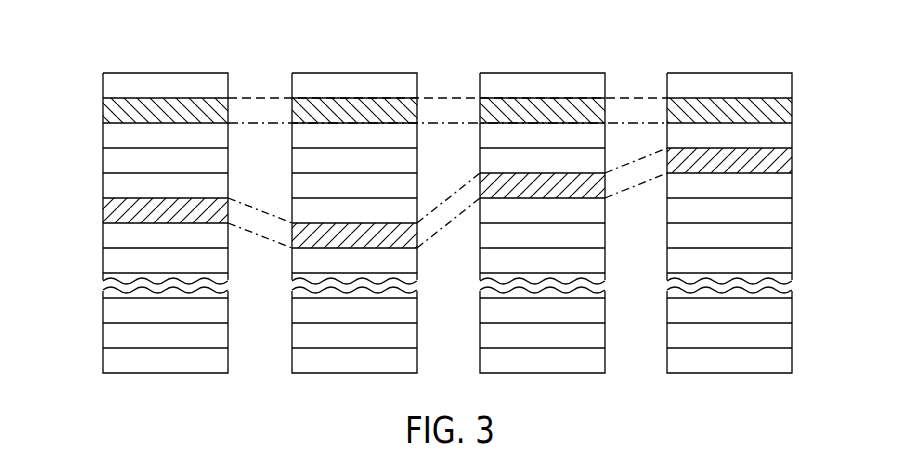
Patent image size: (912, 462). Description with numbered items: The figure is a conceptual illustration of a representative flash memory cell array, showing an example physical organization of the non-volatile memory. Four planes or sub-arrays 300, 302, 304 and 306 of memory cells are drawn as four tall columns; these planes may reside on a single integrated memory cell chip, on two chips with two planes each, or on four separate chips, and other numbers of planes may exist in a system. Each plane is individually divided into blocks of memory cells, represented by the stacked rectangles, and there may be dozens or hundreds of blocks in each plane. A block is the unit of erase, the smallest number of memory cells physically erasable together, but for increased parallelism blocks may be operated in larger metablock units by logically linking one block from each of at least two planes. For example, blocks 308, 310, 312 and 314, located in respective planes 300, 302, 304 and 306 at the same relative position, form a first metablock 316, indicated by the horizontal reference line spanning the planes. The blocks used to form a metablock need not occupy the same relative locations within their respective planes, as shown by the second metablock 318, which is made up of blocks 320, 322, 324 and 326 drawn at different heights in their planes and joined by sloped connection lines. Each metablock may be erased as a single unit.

The plane 300 is at (163, 65).
The plane 302 is at (355, 65).
The plane 304 is at (540, 65).
The plane 306 is at (768, 72).
The block 308 is at (147, 112).
The block 310 is at (333, 110).
The block 312 is at (520, 113).
The block 314 is at (757, 110).
The first metablock 316 is at (635, 97).
The second metablock 318 is at (640, 157).
The block 320 is at (140, 210).
The block 322 is at (330, 232).
The block 324 is at (528, 183).
The block 326 is at (758, 157).